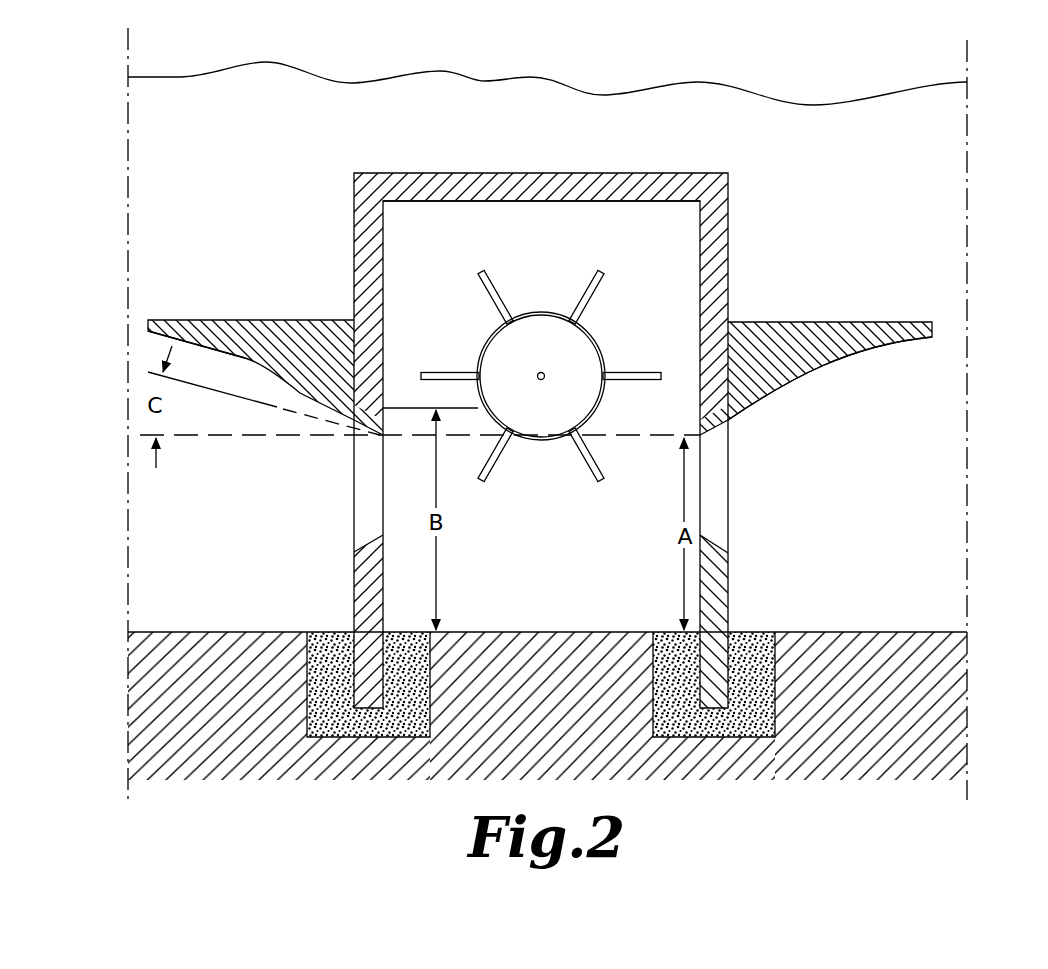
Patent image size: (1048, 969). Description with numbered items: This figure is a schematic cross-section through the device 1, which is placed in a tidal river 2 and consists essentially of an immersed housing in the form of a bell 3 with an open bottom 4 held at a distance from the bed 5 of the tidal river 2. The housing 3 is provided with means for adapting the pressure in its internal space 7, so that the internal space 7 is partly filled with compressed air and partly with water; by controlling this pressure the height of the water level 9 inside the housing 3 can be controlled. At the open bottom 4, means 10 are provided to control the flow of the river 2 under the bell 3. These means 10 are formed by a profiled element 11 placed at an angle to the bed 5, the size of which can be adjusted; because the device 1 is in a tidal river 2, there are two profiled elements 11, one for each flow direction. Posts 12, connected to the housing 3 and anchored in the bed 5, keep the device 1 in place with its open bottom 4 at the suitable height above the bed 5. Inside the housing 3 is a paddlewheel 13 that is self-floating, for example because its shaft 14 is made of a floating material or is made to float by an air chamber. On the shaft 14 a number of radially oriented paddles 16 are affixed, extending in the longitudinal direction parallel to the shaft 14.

The device 1 is at (106, 90).
The tidal river 2 is at (877, 463).
The housing in the form of a bell 3 is at (354, 173).
The open bottom 4 is at (640, 440).
The bed 5 is at (240, 733).
The internal space 7 is at (528, 248).
The water level 9 is at (605, 408).
The means to control the flow 10 is at (142, 301).
The profiled element 11 is at (247, 356).
The posts 12 is at (354, 605).
The paddlewheel 13 is at (497, 357).
The shaft 14 is at (542, 372).
The paddles 16 is at (652, 370).